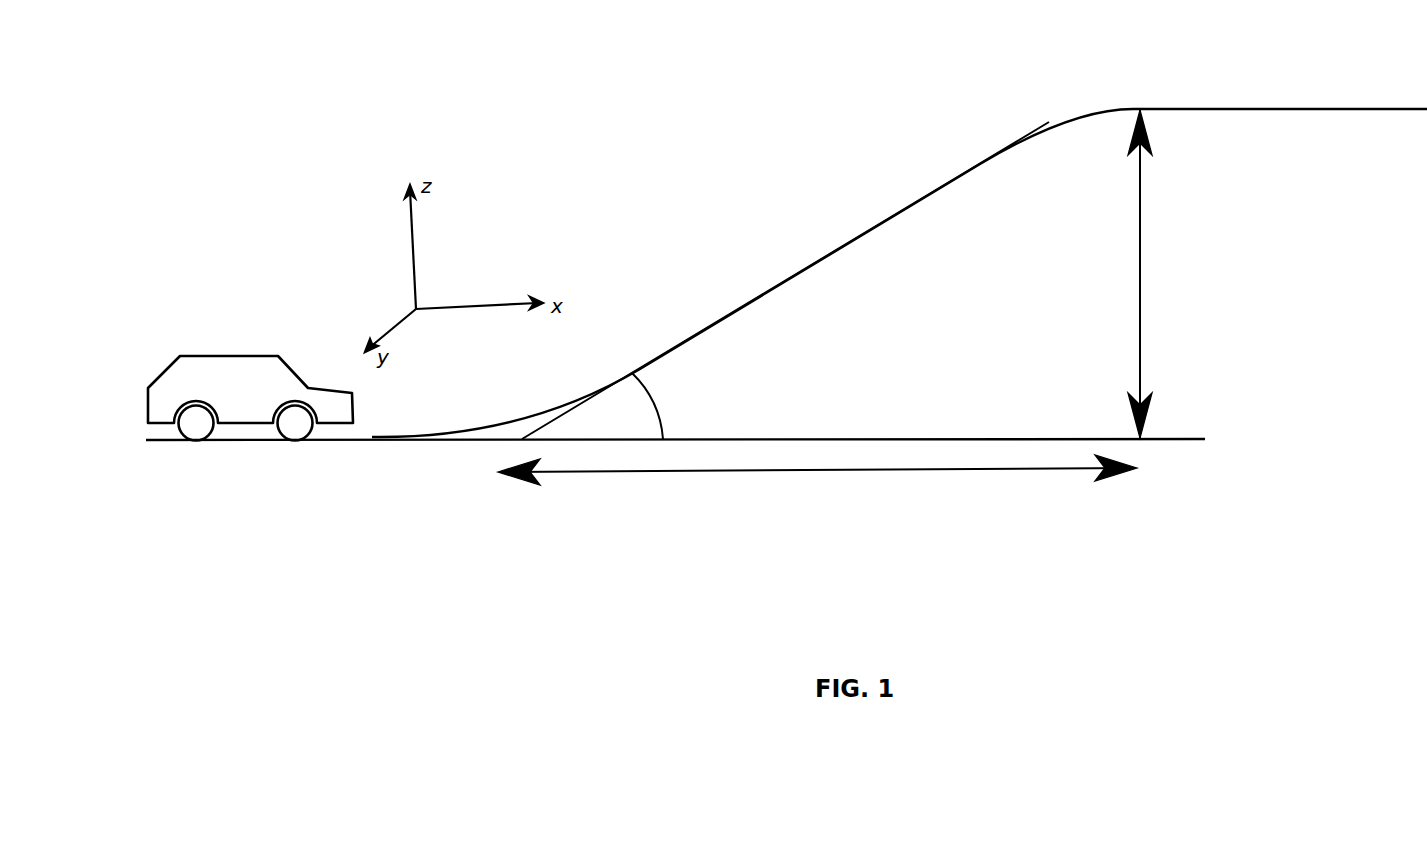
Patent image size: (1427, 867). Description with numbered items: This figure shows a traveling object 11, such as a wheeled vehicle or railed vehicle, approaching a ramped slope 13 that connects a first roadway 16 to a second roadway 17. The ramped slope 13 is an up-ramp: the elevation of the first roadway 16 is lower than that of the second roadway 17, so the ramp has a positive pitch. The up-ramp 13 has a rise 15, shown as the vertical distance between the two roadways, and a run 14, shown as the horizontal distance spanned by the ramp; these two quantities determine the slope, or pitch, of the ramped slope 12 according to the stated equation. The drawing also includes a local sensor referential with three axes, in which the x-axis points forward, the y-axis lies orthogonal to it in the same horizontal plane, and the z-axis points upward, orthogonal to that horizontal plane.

The traveling object 11 is at (250, 365).
The ramped slope 12 is at (752, 273).
The ramped slope 13 is at (785, 280).
The run 14 is at (817, 492).
The rise 15 is at (1049, 274).
The first roadway 16 is at (675, 475).
The second roadway 17 is at (1280, 73).